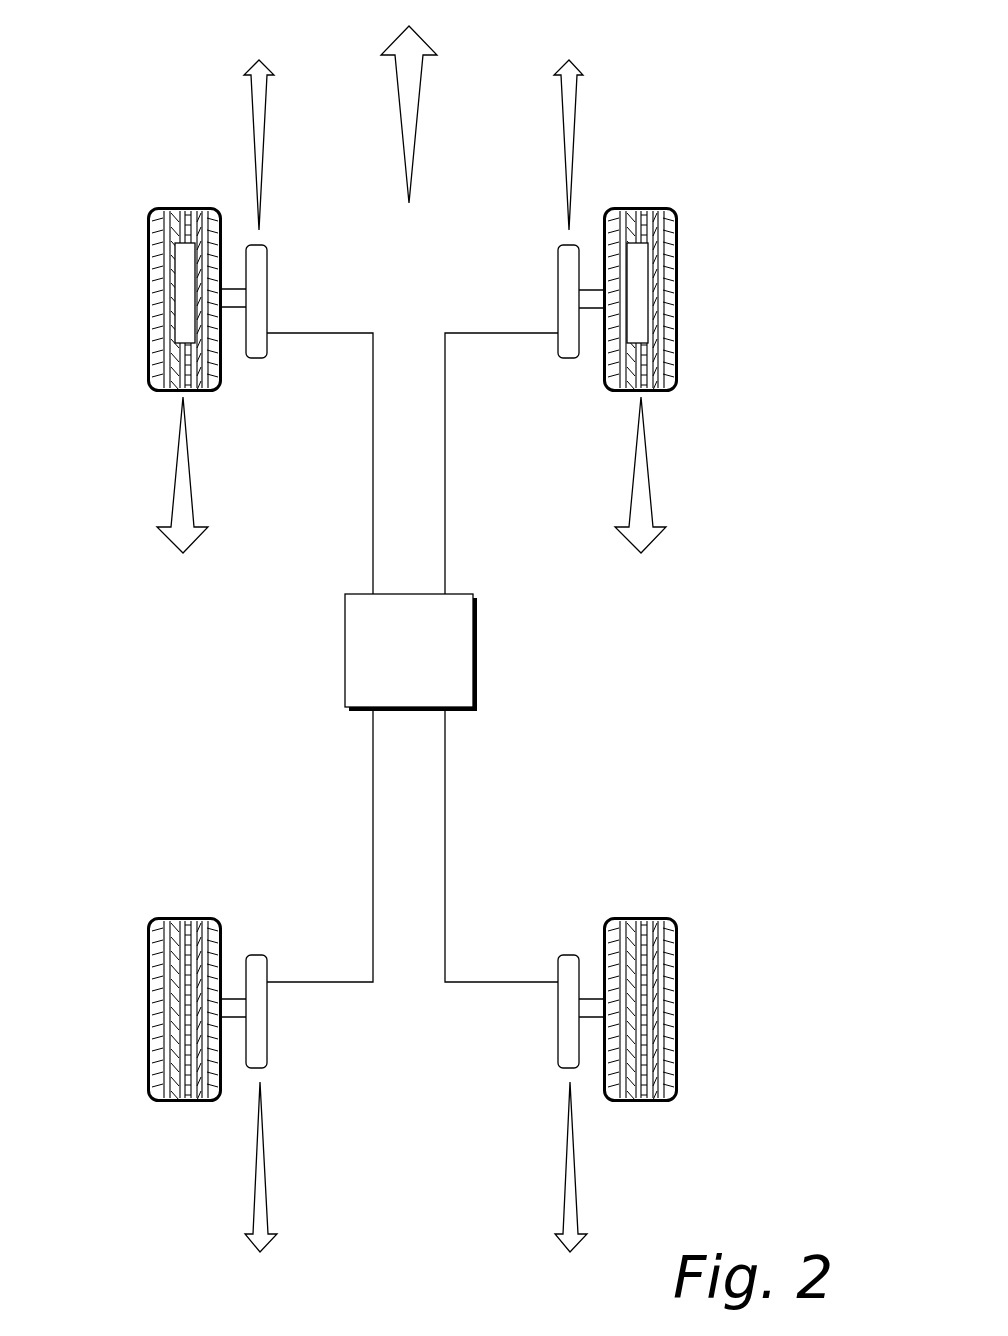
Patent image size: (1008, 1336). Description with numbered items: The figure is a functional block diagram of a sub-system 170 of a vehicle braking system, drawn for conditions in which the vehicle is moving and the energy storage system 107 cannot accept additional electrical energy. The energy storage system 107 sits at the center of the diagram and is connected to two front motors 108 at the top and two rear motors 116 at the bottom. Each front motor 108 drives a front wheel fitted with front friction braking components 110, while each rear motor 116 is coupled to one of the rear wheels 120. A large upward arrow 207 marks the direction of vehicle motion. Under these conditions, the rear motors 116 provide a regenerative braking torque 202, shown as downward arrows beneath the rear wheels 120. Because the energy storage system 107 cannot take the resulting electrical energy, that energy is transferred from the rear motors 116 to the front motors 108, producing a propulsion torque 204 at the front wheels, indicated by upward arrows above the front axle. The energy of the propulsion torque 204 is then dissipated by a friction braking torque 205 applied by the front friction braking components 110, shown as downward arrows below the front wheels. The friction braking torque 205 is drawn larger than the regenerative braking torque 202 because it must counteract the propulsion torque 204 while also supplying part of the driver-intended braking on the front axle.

The energy storage system 107 is at (477, 637).
The front motors 108 is at (257, 297).
The front friction braking components 110 is at (182, 315).
The rear motors 116 is at (257, 1025).
The rear wheels 120 is at (160, 983).
The sub-system 170 is at (680, 113).
The regenerative braking torque 202 is at (256, 1188).
The propulsion torque 204 is at (253, 100).
The friction braking torque 205 is at (173, 475).
The vehicle motion direction arrow 207 is at (421, 36).